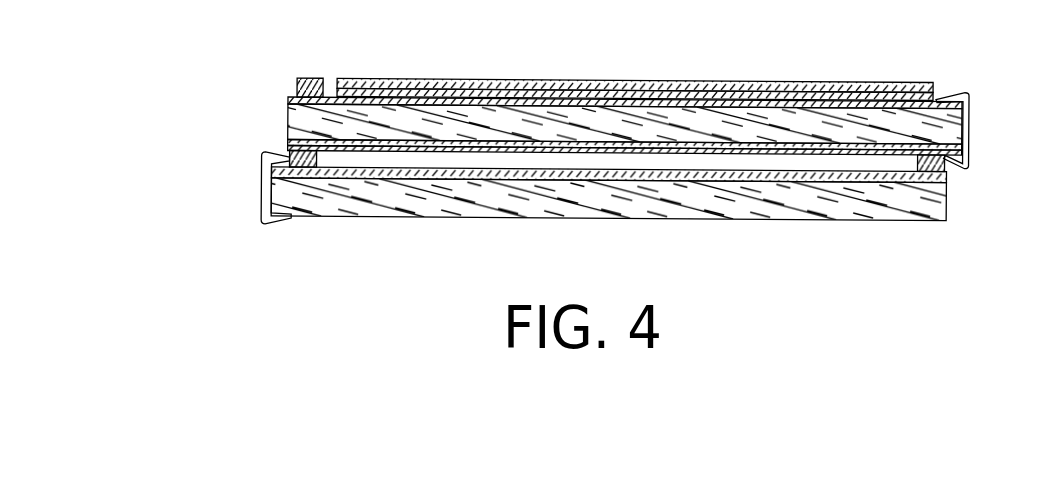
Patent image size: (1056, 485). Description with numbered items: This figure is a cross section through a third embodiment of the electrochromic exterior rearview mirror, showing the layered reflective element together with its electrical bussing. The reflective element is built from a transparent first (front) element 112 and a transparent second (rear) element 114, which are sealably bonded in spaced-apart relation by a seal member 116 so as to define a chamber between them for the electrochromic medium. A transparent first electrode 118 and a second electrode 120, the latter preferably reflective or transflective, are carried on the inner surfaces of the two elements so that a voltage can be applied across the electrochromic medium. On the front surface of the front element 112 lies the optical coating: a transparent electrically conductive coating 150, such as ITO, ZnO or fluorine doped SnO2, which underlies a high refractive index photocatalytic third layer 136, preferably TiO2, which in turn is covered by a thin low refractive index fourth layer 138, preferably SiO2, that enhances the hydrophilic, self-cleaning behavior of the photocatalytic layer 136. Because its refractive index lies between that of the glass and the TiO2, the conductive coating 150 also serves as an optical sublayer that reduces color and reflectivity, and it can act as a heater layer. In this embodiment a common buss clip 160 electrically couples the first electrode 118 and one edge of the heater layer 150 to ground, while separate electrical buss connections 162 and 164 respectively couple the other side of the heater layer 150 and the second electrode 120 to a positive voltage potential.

The first element 112 is at (289, 122).
The second element 114 is at (558, 203).
The seal member 116 is at (290, 157).
The first electrode 118 is at (947, 152).
The second electrode 120 is at (454, 173).
The third layer 136 is at (703, 94).
The fourth layer 138 is at (805, 85).
The transparent electrically conductive coating 150 is at (913, 101).
The common buss clip 160 is at (970, 97).
The electrical buss connection 162 is at (317, 78).
The electrical buss connection 164 is at (262, 197).